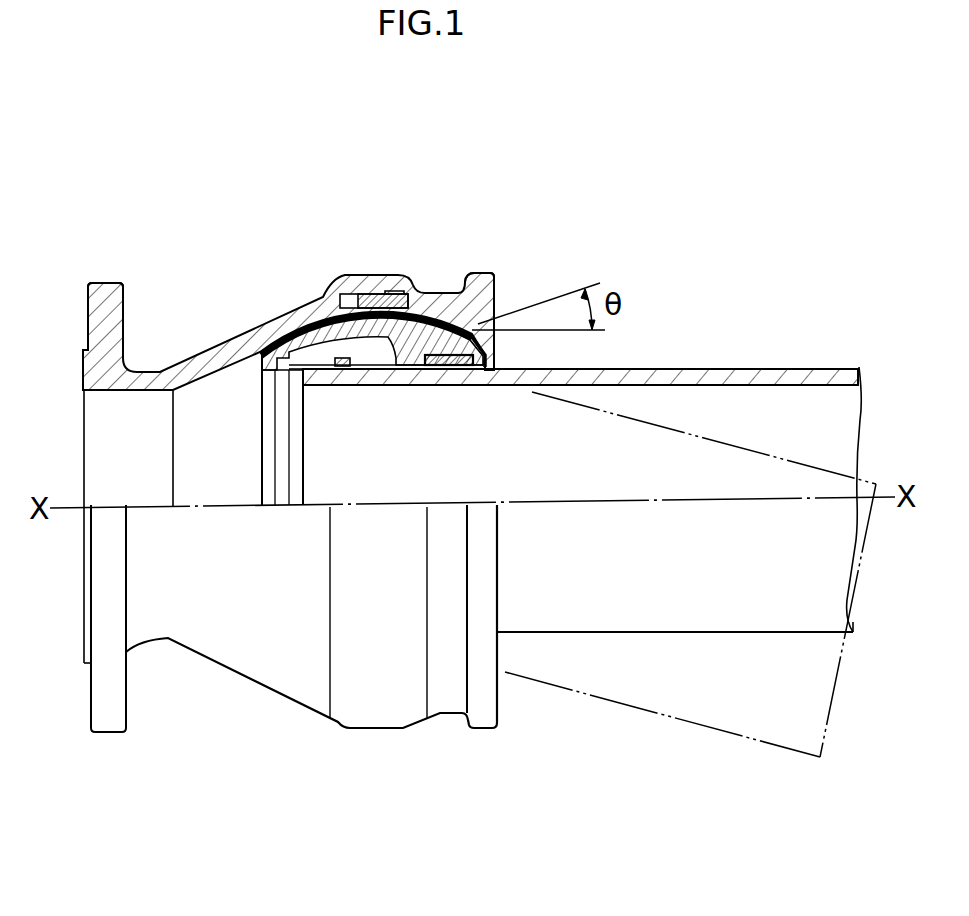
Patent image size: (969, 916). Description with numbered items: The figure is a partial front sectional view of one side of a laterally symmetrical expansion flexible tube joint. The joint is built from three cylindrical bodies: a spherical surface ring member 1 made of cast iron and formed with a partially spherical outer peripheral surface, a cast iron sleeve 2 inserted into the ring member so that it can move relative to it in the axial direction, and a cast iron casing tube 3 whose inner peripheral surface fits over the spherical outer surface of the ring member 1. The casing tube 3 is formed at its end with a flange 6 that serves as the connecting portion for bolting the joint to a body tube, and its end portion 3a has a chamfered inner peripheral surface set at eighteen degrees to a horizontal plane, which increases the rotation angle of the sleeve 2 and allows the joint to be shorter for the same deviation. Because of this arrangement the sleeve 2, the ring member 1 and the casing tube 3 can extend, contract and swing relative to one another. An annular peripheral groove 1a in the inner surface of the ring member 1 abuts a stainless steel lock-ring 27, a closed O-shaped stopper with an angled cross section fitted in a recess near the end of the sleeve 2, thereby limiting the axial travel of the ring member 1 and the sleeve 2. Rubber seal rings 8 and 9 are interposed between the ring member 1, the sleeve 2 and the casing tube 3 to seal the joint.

The spherical surface ring member 1 is at (325, 293).
The annular peripheral groove 1a is at (377, 360).
The sleeve 2 is at (787, 368).
The casing tube 3 is at (290, 315).
The end portion of the casing tube 3a is at (482, 277).
The flange 6 is at (110, 278).
The rubber seal ring 8 is at (440, 372).
The rubber seal ring 9 is at (402, 303).
The lock-ring 27 is at (288, 365).